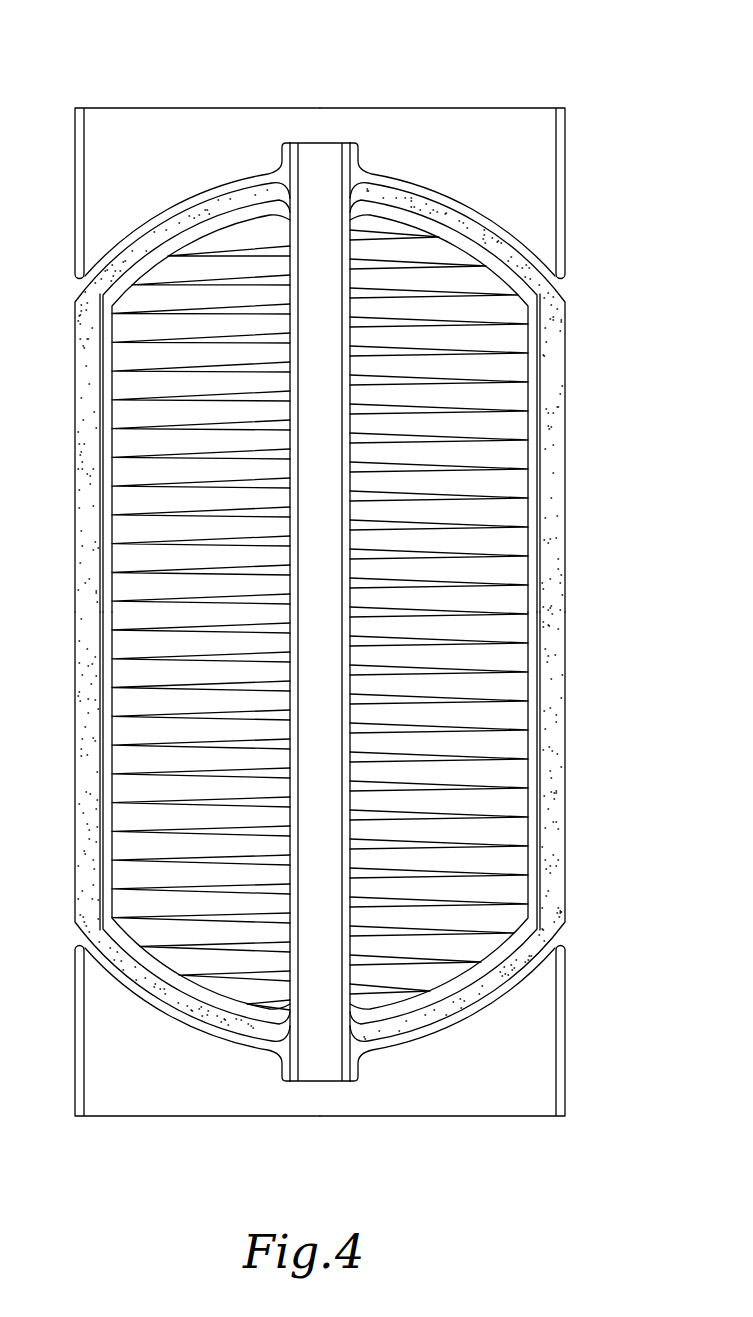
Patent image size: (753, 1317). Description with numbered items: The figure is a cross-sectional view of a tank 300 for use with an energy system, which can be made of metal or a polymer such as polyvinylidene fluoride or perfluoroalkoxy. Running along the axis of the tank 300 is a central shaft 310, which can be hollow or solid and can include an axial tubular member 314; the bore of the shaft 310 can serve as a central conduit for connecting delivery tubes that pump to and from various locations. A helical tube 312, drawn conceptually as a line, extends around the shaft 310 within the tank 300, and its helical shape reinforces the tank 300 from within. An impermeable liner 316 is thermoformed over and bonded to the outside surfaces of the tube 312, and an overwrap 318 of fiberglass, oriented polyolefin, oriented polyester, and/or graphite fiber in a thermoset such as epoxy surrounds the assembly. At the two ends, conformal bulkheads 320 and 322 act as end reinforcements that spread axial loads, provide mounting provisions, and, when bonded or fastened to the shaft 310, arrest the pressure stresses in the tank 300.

The tank 300 is at (572, 58).
The central shaft 310 is at (320, 1070).
The helical tube 312 is at (490, 523).
The axial tubular member 314 is at (347, 1082).
The impermeable liner 316 is at (536, 366).
The overwrap 318 is at (567, 745).
The conformal bulkhead 320 is at (564, 949).
The conformal bulkhead 322 is at (565, 219).